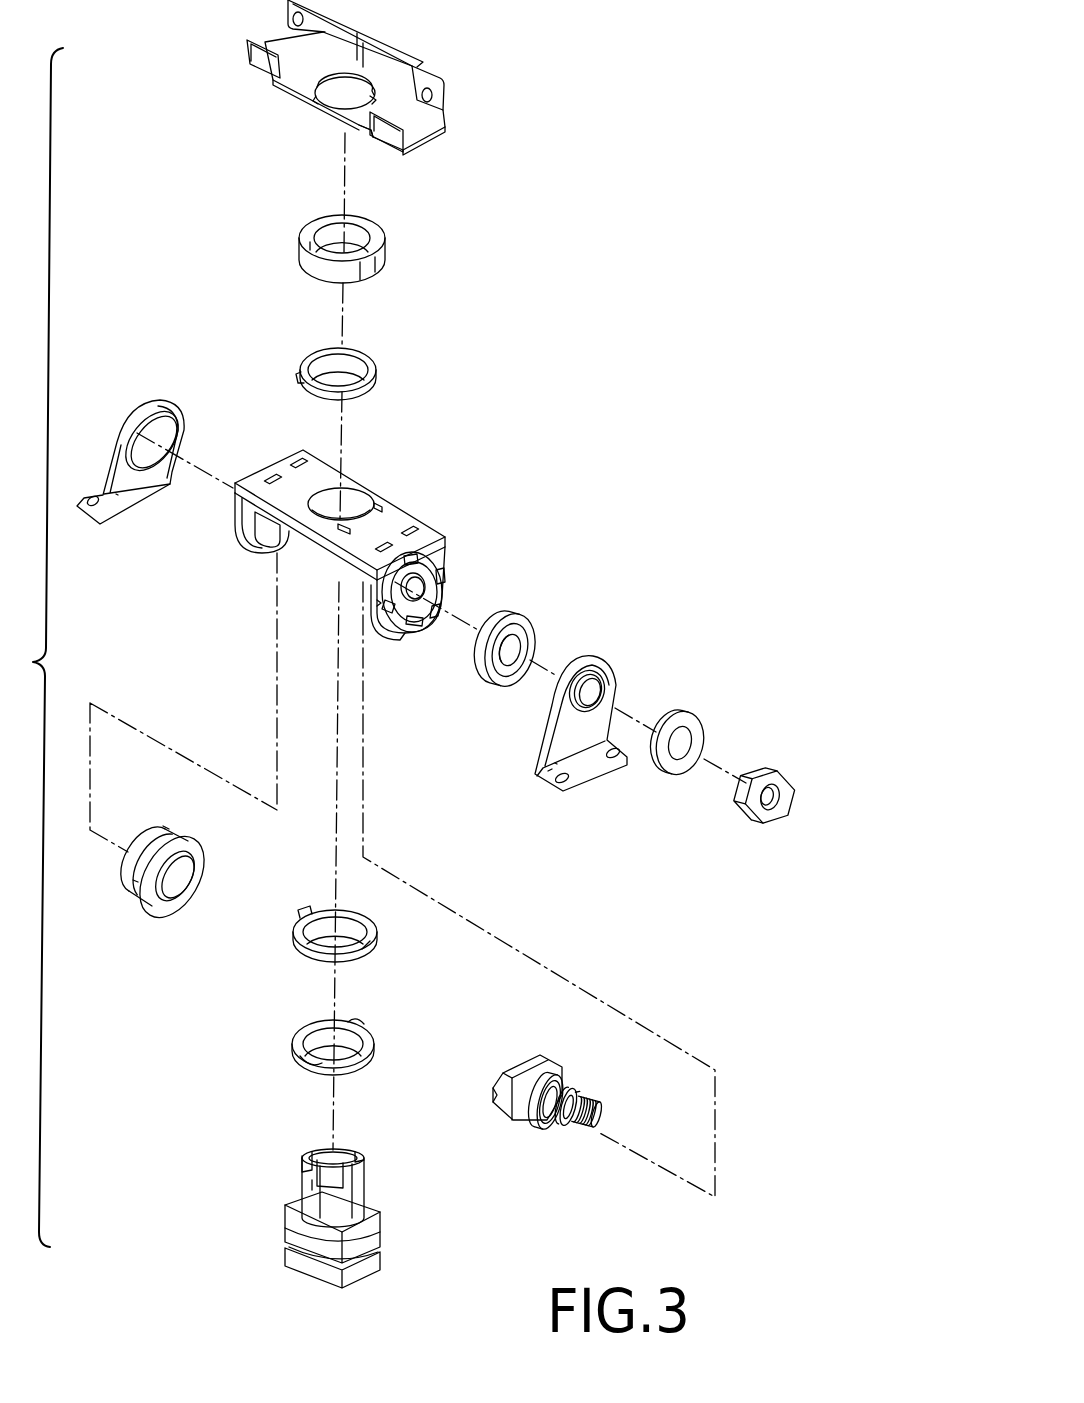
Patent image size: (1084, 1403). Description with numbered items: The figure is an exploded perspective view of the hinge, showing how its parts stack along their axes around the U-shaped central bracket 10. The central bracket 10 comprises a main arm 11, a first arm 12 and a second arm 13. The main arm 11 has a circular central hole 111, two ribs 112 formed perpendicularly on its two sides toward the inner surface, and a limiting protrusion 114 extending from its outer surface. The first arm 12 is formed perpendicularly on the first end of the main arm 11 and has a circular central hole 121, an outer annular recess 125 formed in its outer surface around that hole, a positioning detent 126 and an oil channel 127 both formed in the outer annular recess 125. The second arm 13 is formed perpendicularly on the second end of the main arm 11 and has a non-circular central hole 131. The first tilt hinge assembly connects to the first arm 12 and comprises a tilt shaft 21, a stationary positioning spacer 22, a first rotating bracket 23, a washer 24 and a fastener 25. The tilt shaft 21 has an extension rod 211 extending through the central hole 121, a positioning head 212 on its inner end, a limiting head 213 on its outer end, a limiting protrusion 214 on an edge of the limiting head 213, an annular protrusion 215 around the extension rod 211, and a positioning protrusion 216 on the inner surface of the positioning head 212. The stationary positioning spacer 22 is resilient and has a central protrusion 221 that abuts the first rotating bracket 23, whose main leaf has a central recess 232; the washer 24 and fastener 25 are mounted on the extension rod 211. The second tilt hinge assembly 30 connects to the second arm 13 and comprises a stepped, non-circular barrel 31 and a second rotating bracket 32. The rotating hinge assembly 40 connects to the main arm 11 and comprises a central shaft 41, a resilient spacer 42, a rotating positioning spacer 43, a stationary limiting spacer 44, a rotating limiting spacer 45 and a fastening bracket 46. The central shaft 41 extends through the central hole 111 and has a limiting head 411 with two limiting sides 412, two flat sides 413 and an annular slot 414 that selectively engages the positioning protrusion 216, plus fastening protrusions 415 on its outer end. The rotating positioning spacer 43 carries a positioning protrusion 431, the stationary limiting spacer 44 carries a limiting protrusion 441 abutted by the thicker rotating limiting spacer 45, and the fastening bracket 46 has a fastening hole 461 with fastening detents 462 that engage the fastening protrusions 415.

The rotating hinge assembly 40 is at (458, 52).
The fastening bracket 46 is at (423, 128).
The fastening hole 461 is at (316, 93).
The fastening detents 462 is at (358, 127).
The rotating limiting spacer 45 is at (368, 224).
The stationary limiting spacer 44 is at (377, 363).
The limiting protrusion 441 is at (300, 376).
The central bracket 10 is at (263, 453).
The main arm 11 is at (405, 515).
The central hole 111 is at (347, 497).
The limiting protrusion 114 is at (378, 512).
The ribs 112 is at (333, 548).
The first arm 12 is at (442, 546).
The central hole 121 is at (418, 591).
The outer annular recess 125 is at (398, 618).
The positioning detent 126 is at (442, 578).
The oil channel 127 is at (422, 612).
The second arm 13 is at (236, 510).
The central hole 131 is at (263, 536).
The second tilt hinge assembly 30 is at (190, 613).
The barrel 31 is at (165, 908).
The second rotating bracket 32 is at (118, 503).
The stationary positioning spacer 22 is at (533, 643).
The central protrusion 221 is at (535, 623).
The first rotating bracket 23 is at (603, 662).
The central recess 232 is at (603, 687).
The washer 24 is at (700, 723).
The fastener 25 is at (780, 784).
The rotating positioning spacer 43 is at (367, 924).
The positioning protrusion 431 is at (312, 913).
The resilient spacer 42 is at (315, 1023).
The central shaft 41 is at (303, 1189).
The limiting head 411 is at (373, 1203).
The limiting sides 412 is at (290, 1235).
The flat sides 413 is at (372, 1231).
The annular slot 414 is at (357, 1256).
The fastening protrusions 415 is at (347, 1156).
The tilt shaft 21 is at (528, 1120).
The extension rod 211 is at (585, 1125).
The positioning head 212 is at (505, 1113).
The limiting head 213 is at (540, 1130).
The limiting protrusion 214 is at (583, 1093).
The annular protrusion 215 is at (565, 1092).
The positioning protrusion 216 is at (498, 1093).